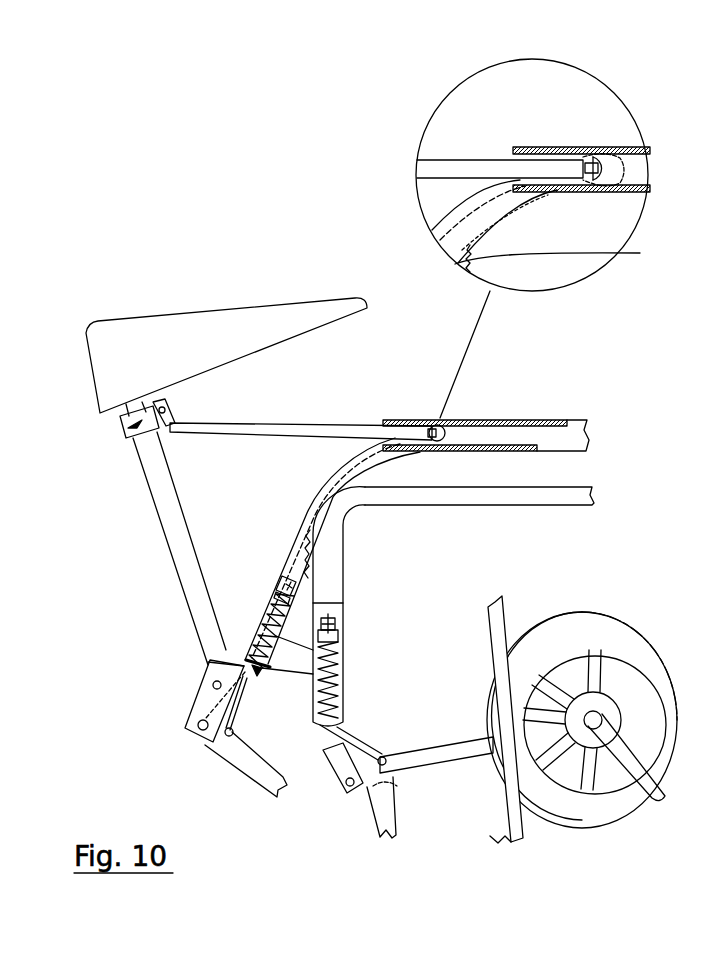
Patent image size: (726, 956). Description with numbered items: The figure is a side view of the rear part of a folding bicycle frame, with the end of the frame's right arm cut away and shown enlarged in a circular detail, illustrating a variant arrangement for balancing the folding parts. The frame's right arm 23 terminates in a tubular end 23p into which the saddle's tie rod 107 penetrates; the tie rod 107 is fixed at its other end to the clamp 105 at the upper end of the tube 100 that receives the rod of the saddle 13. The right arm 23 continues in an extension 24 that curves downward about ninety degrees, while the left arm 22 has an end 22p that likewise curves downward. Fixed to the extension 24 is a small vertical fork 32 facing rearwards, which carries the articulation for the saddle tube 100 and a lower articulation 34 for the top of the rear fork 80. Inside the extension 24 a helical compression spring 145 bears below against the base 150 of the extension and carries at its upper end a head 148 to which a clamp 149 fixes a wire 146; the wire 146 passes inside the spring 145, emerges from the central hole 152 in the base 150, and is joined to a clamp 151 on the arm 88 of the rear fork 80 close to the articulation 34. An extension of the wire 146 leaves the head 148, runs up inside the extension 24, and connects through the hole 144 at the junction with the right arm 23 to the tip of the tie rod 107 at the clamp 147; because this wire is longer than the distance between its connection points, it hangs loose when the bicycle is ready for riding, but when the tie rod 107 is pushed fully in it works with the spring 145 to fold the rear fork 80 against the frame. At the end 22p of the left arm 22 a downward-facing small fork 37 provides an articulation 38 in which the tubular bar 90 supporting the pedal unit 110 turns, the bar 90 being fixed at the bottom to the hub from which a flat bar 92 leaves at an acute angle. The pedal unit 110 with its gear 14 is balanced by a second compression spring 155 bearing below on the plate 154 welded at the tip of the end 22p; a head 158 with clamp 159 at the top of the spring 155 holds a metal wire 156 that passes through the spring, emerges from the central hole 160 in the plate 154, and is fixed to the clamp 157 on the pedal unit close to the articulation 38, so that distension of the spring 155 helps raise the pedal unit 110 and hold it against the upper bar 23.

The saddle 13 is at (274, 314).
The gear 14 is at (632, 652).
The left arm 22 is at (552, 500).
The end of arm 22 22p is at (343, 532).
The right arm 23 is at (572, 437).
The tubular end 23p is at (520, 450).
The extension 24 is at (328, 470).
The small vertical fork 32 is at (210, 702).
The lower articulation 34 is at (197, 735).
The small fork 37 is at (346, 798).
The articulation 38 is at (384, 802).
The rear fork 80 is at (277, 799).
The arm of the rear fork 88 is at (329, 813).
The tubular bar 90 is at (471, 757).
The flat bar 92 is at (527, 808).
The tube 100 is at (170, 520).
The clamp 105 is at (122, 428).
The tie rod 107 is at (233, 428).
The pedal unit 110 is at (624, 598).
The hole 144 is at (620, 170).
The spring 145 is at (258, 628).
The wire 146 is at (352, 450).
The clamp 147 is at (455, 428).
The head 148 is at (280, 590).
The clamp 149 is at (288, 577).
The base 150 is at (223, 652).
The clamp 151 is at (226, 745).
The central hole 152 is at (265, 680).
The plate 154 is at (335, 712).
The spring 155 is at (344, 662).
The metal wire 156 is at (385, 735).
The clamp 157 is at (388, 766).
The head 158 is at (338, 636).
The clamp 159 is at (330, 618).
The central hole 160 is at (327, 793).